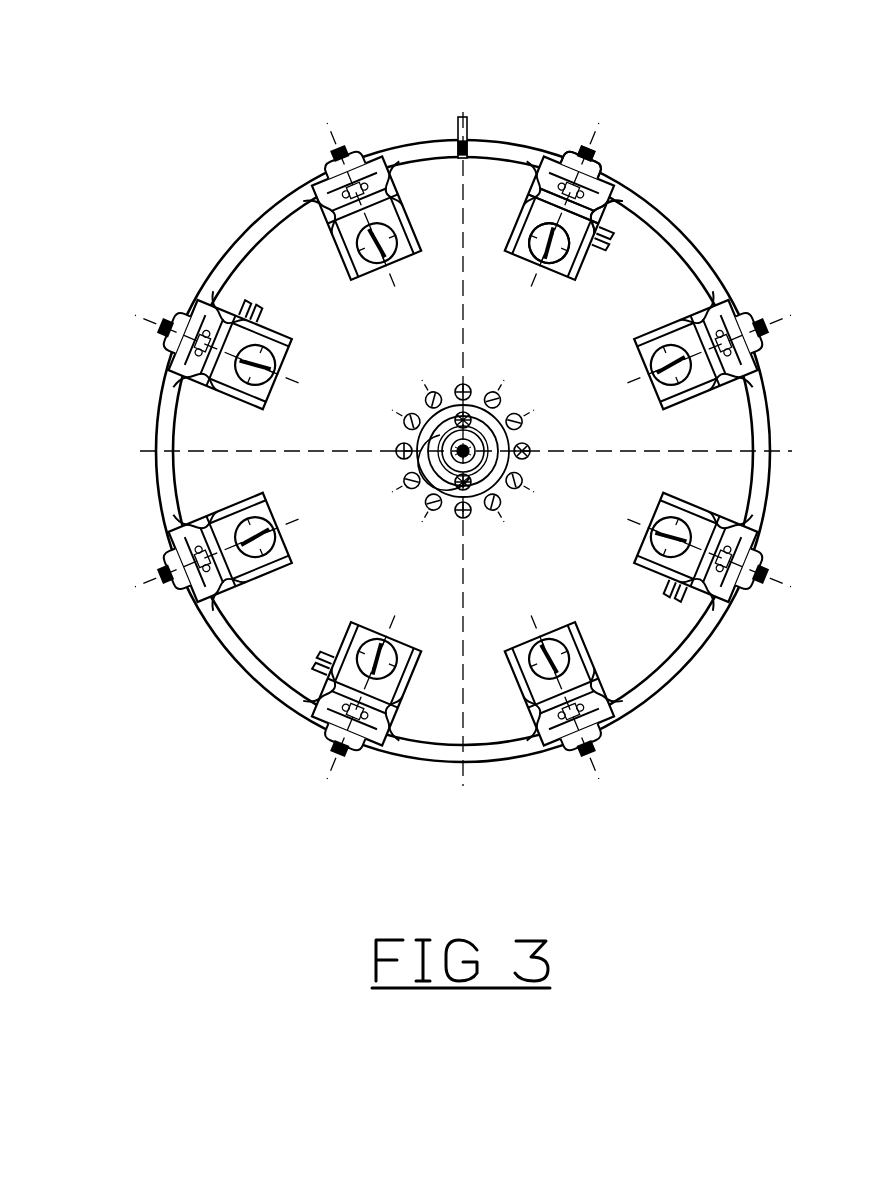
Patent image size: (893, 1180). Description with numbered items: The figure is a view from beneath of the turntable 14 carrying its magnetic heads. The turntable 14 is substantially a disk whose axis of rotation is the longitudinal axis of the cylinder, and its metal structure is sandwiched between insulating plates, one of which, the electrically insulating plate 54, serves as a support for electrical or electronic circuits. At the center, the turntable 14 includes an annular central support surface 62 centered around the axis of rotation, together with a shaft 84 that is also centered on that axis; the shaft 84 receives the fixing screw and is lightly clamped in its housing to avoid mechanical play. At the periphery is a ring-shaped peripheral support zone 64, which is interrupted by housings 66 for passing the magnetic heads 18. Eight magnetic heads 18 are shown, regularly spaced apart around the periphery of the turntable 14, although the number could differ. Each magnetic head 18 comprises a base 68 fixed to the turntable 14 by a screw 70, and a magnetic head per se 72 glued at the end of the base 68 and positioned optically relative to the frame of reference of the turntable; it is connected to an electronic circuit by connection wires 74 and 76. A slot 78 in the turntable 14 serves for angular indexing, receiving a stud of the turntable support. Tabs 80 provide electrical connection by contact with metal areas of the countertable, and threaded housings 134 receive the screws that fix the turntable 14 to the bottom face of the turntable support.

The turntable 14 is at (237, 231).
The magnetic head 18 is at (637, 183).
The electrically insulating plate 54 is at (392, 345).
The central support surface 62 is at (483, 447).
The peripheral support zone 64 is at (268, 222).
The housing 66 is at (605, 185).
The base 68 is at (552, 208).
The screw 70 is at (540, 263).
The magnetic head per se 72 is at (588, 150).
The connection wire 74 is at (608, 208).
The connection wire 76 is at (615, 248).
The slot 78 is at (460, 117).
The tabs 80 is at (493, 508).
The shaft 84 is at (455, 449).
The threaded housings 134 is at (469, 417).